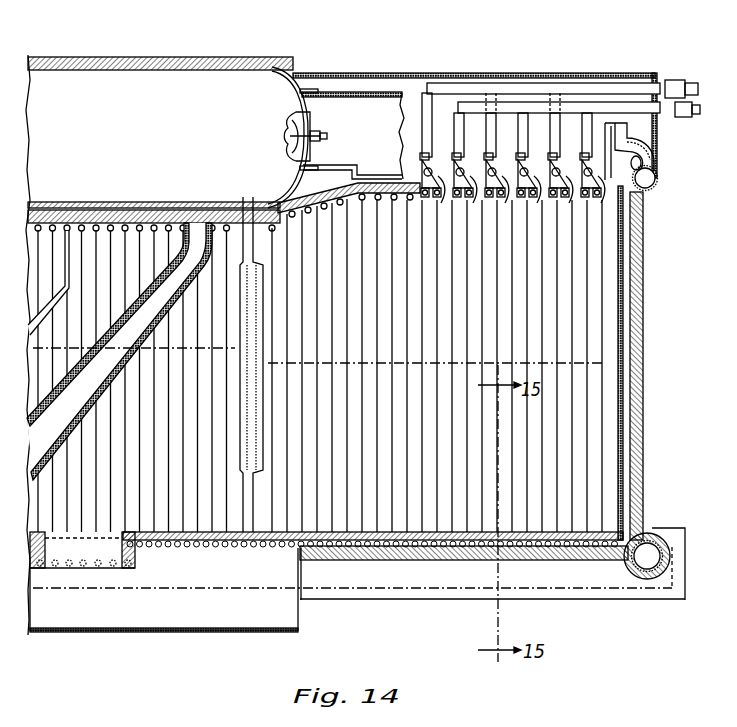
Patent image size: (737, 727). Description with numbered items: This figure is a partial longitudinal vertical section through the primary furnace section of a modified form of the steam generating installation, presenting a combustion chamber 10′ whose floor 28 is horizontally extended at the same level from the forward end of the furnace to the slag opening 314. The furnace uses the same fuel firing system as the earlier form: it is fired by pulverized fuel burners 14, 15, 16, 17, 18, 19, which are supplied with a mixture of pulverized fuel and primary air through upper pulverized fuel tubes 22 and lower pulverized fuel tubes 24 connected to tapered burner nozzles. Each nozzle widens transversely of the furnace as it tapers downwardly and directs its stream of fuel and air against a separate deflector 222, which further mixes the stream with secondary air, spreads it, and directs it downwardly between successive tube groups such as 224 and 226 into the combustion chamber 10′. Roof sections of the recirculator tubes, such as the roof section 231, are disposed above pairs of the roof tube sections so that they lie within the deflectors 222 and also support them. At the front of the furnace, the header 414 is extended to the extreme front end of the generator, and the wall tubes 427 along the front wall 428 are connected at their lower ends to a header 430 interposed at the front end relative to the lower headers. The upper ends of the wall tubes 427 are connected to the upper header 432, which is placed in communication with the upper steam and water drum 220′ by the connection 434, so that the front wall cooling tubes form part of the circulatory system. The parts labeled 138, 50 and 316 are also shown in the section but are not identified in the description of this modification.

The cylindrical housing 138 is at (122, 73).
The upper pulverized fuel tube 22 is at (658, 84).
The lower pulverized fuel tube 24 is at (686, 82).
The pulverized fuel burner 19 is at (421, 118).
The pulverized fuel burner 18 is at (458, 131).
The pulverized fuel burner 17 is at (490, 135).
The pulverized fuel burner 16 is at (521, 135).
The pulverized fuel burner 15 is at (553, 135).
The pulverized fuel burner 14 is at (587, 135).
The steam and water drum 220′ is at (630, 133).
The connection 434 is at (657, 155).
The upper header 432 is at (657, 183).
The wall tube 427 is at (631, 316).
The front wall 428 is at (641, 441).
The tube group 226 is at (421, 198).
The tube group 224 is at (433, 200).
The deflector 222 is at (583, 190).
The recirculator tube roof section 231 is at (534, 188).
The combustion chamber 10′ is at (421, 346).
The inclined channel 50 is at (68, 423).
The slag opening 314 is at (98, 555).
The lower housing 316 is at (130, 632).
The floor 28 is at (413, 532).
The header 414 is at (447, 592).
The header 430 is at (641, 568).